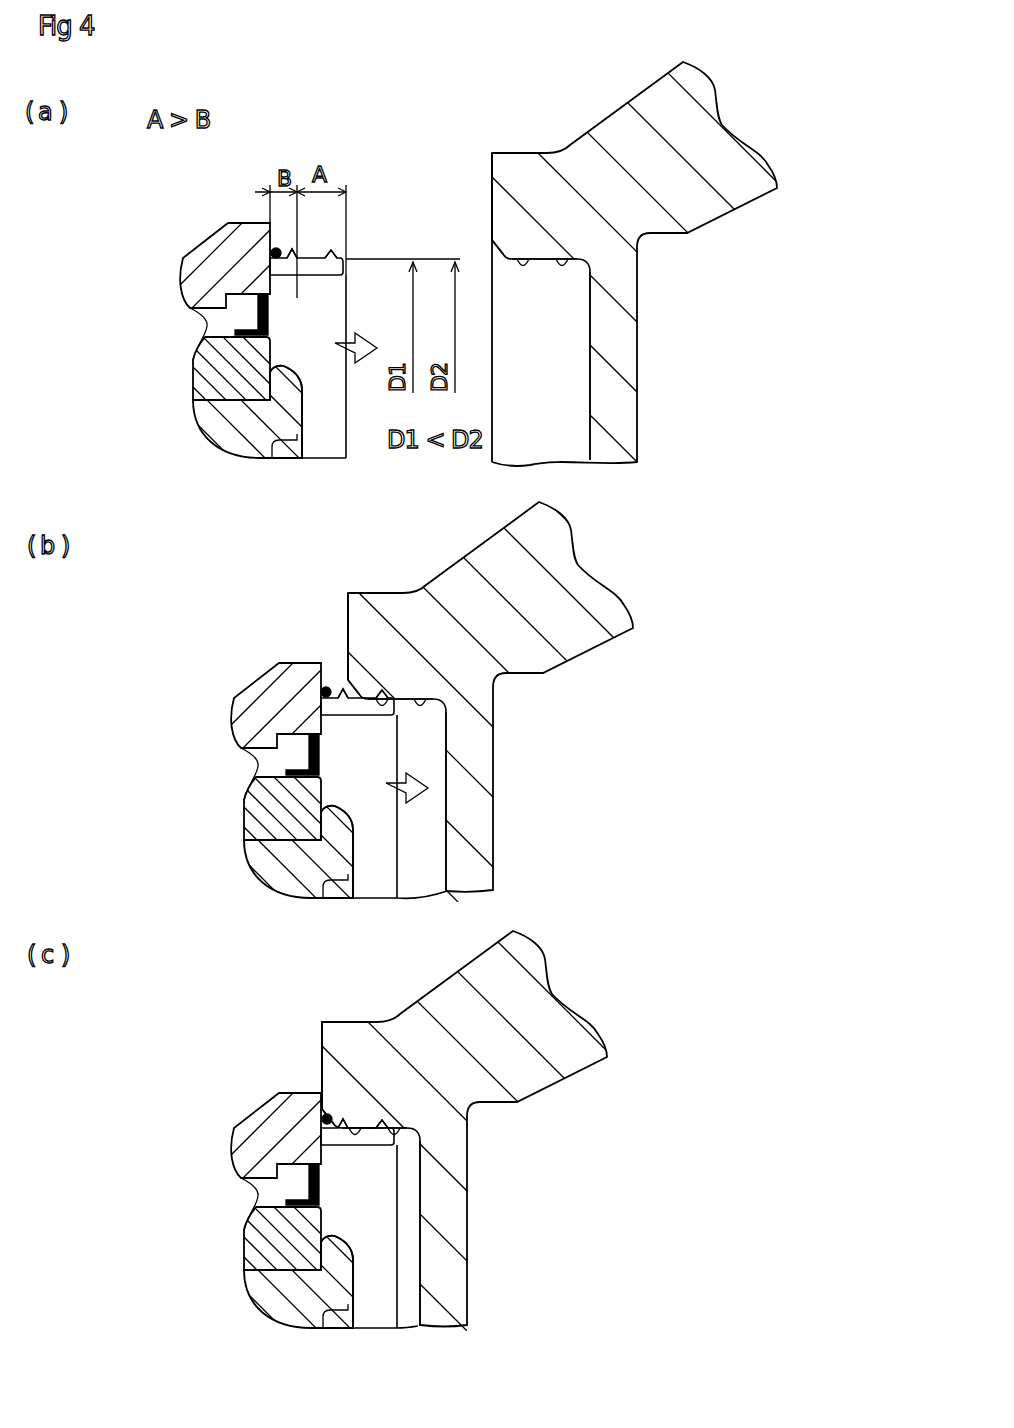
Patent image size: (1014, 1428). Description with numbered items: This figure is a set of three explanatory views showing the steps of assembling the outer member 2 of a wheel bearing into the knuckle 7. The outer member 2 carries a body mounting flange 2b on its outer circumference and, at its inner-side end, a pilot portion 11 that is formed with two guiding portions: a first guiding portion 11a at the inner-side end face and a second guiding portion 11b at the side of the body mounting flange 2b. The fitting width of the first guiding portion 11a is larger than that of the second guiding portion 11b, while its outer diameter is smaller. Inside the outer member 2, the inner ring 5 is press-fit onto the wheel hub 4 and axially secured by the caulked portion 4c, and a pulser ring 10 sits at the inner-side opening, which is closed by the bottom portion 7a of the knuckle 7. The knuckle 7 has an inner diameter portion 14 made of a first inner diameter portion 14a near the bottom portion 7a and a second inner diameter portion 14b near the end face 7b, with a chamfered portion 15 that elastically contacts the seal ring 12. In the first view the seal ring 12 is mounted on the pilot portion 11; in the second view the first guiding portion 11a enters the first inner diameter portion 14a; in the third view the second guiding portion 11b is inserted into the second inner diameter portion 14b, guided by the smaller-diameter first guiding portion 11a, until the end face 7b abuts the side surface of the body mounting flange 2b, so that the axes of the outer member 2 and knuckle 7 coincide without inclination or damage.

The outer member 2 is at (185, 278).
The body mounting flange 2b is at (255, 222).
The wheel hub 4 is at (209, 428).
The caulked portion 4c is at (290, 385).
The inner ring 5 is at (199, 380).
The knuckle 7 is at (590, 148).
The bottom portion 7a is at (610, 390).
The end face 7b is at (490, 167).
The pulser ring 10 is at (235, 332).
The pilot portion 11 is at (338, 322).
The first guiding portion 11a is at (333, 262).
The second guiding portion 11b is at (292, 262).
The seal ring 12 is at (271, 252).
The inner diameter portion 14 is at (590, 203).
The first inner diameter portion 14a is at (570, 258).
The second inner diameter portion 14b is at (527, 257).
The chamfered portion 15 is at (487, 250).